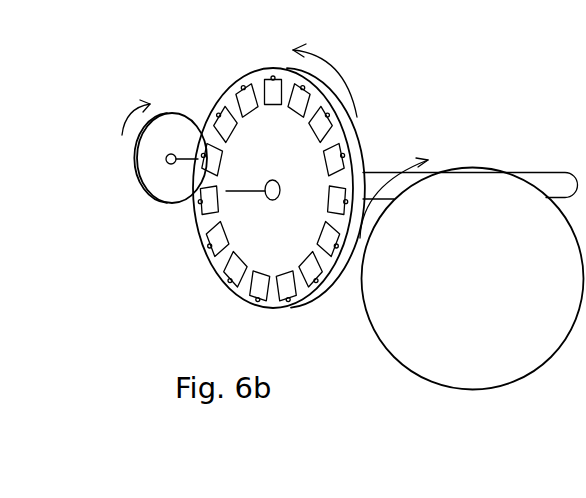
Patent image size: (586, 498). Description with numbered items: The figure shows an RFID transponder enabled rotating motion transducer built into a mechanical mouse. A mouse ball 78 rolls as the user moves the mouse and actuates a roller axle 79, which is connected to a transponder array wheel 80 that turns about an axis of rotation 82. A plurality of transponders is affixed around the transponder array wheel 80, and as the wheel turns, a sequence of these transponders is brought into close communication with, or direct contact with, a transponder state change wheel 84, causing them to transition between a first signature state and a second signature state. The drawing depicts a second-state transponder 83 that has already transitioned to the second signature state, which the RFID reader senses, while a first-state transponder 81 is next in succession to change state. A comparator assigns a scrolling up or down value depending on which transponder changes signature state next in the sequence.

The mouse ball 78 is at (470, 180).
The roller axle 79 is at (528, 173).
The transponder array wheel 80 is at (330, 283).
The state 1 transponder 81 is at (217, 118).
The axis of rotation 82 is at (236, 193).
The state 2 transponder 83 is at (218, 172).
The transponder state change wheel 84 is at (136, 177).